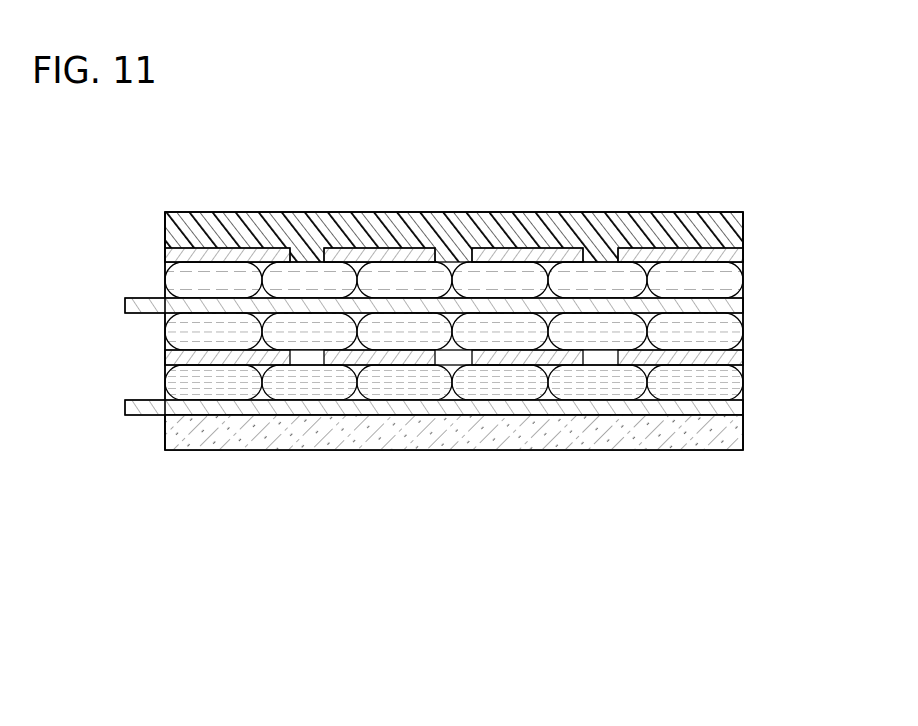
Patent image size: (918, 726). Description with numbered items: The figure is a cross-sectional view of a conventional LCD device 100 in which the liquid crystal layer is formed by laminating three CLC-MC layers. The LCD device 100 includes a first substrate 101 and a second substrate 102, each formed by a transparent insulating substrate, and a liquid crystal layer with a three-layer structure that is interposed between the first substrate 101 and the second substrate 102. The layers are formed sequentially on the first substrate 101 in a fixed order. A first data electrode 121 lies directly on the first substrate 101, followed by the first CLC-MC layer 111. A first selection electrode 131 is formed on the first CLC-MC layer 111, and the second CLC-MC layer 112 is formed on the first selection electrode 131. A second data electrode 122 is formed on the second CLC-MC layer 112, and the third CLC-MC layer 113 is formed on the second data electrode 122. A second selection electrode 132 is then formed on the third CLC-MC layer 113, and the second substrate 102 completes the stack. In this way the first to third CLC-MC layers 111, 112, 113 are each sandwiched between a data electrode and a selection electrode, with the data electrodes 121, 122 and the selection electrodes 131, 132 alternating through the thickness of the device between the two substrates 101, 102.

The LCD device 100 is at (465, 165).
The first substrate 101 is at (222, 226).
The second substrate 102 is at (225, 436).
The first CLC-MC layer 111 is at (160, 279).
The second CLC-MC layer 112 is at (158, 330).
The third CLC-MC layer 113 is at (158, 378).
The first data electrode 121 is at (735, 256).
The second data electrode 122 is at (735, 358).
The first selection electrode 131 is at (735, 307).
The second selection electrode 132 is at (735, 408).